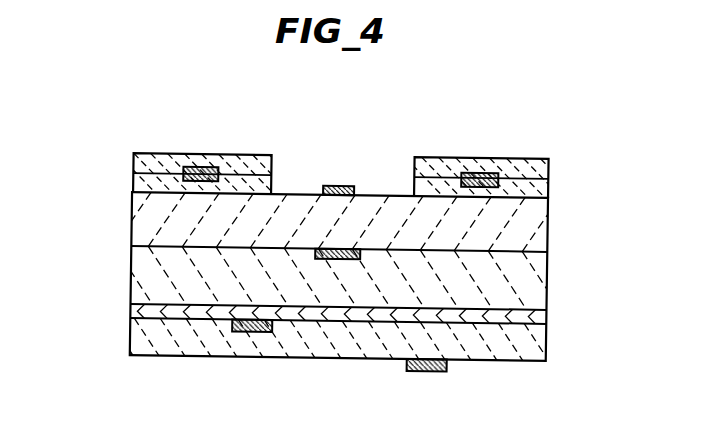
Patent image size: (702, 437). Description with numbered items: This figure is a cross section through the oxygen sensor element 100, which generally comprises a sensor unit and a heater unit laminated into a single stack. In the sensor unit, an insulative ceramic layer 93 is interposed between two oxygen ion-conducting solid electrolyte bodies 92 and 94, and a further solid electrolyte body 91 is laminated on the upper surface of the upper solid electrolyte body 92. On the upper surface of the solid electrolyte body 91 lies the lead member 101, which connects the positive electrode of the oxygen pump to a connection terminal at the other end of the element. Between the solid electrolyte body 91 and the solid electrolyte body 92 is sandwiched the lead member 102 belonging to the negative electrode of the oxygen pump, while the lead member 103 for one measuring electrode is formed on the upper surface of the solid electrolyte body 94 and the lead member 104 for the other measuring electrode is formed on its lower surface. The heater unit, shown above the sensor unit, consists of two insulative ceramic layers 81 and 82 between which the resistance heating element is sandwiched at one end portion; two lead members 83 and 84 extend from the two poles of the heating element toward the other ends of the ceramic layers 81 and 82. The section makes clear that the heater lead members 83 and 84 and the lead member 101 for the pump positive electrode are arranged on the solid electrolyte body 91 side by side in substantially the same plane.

The oxygen sensor element 100 is at (405, 113).
The insulative ceramic layer 81 is at (167, 160).
The insulative ceramic layer 82 is at (140, 180).
The lead member 83 is at (205, 170).
The lead member 84 is at (475, 173).
The solid electrolyte body 91 is at (530, 226).
The oxygen ion-conducting solid electrolyte body 92 is at (530, 279).
The insulative ceramic layer 93 is at (530, 316).
The oxygen ion-conducting solid electrolyte body 94 is at (530, 348).
The lead member 101 is at (338, 184).
The lead member 102 is at (338, 262).
The lead member 103 is at (253, 334).
The lead member 104 is at (430, 373).